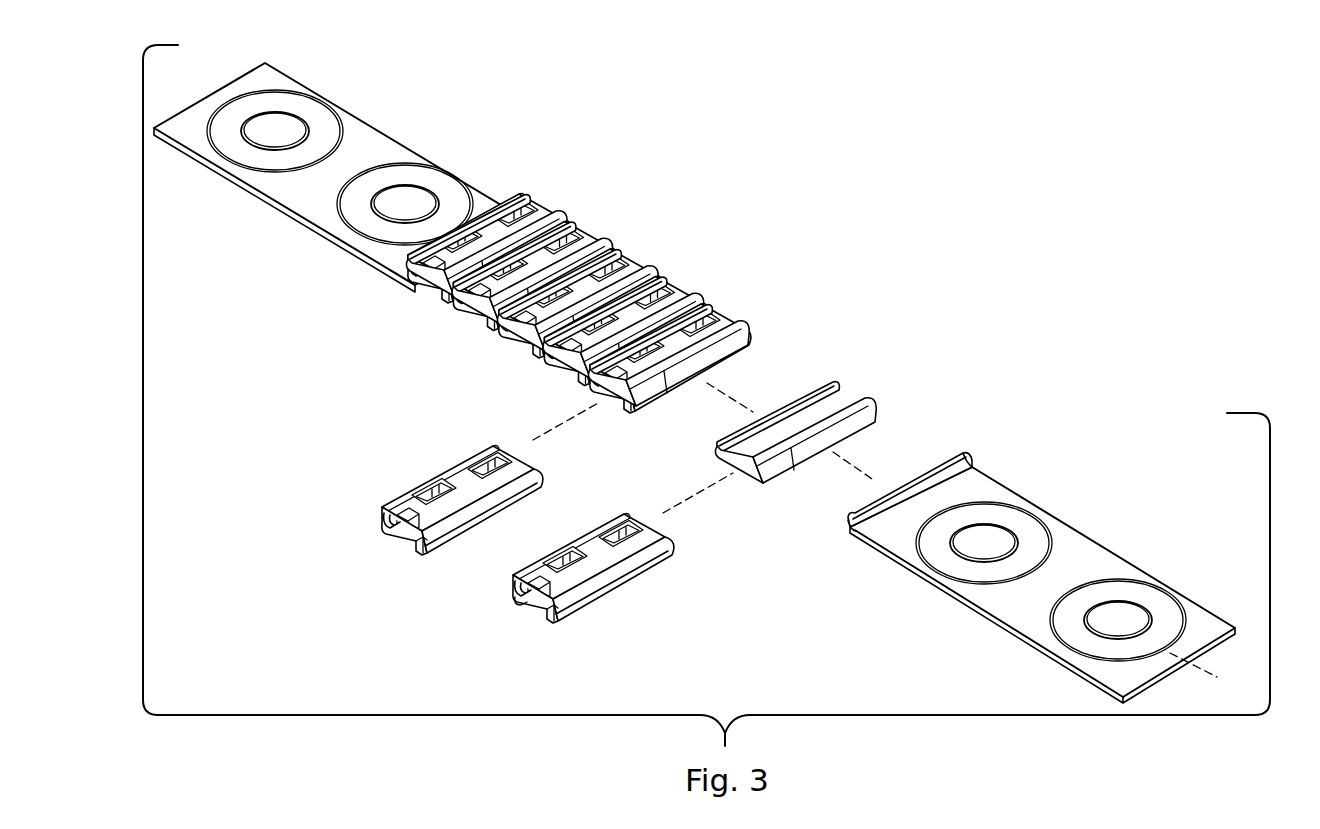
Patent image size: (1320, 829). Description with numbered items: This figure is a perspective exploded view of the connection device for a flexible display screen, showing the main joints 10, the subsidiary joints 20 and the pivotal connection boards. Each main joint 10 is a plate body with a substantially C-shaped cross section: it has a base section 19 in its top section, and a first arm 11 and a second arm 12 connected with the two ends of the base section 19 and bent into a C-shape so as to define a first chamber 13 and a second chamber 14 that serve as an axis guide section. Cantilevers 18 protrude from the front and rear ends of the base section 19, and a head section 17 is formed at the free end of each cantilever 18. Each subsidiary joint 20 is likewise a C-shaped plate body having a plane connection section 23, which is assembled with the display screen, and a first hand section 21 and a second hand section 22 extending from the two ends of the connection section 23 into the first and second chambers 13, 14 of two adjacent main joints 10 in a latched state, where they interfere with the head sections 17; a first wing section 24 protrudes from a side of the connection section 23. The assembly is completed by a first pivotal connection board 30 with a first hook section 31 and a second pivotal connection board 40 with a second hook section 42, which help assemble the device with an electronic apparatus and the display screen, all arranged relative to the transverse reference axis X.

The main joint 10 is at (566, 422).
The first arm 11 is at (499, 599).
The second arm 12 is at (613, 592).
The first chamber 13 is at (490, 624).
The second chamber 14 is at (531, 640).
The head section 17 is at (555, 555).
The cantilever 18 is at (631, 507).
The base section 19 is at (589, 532).
The subsidiary joint 20 is at (672, 411).
The first hand section 21 is at (814, 457).
The second hand section 22 is at (751, 420).
The connection section 23 is at (739, 493).
The first wing section 24 is at (812, 455).
The first pivotal connection board 30 is at (340, 204).
The first hook section 31 is at (430, 283).
The second pivotal connection board 40 is at (1041, 549).
The second hook section 42 is at (953, 456).
The reference axis X is at (1201, 677).